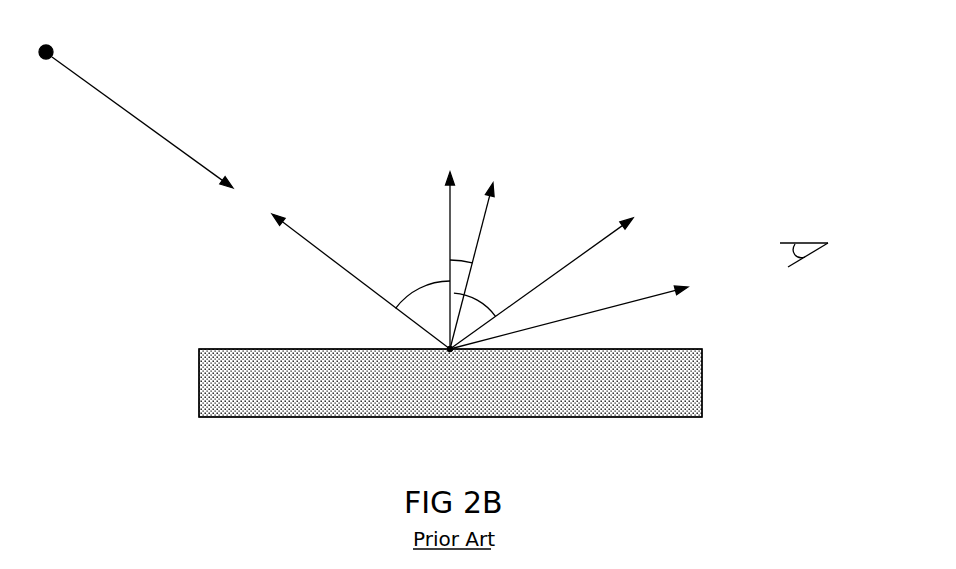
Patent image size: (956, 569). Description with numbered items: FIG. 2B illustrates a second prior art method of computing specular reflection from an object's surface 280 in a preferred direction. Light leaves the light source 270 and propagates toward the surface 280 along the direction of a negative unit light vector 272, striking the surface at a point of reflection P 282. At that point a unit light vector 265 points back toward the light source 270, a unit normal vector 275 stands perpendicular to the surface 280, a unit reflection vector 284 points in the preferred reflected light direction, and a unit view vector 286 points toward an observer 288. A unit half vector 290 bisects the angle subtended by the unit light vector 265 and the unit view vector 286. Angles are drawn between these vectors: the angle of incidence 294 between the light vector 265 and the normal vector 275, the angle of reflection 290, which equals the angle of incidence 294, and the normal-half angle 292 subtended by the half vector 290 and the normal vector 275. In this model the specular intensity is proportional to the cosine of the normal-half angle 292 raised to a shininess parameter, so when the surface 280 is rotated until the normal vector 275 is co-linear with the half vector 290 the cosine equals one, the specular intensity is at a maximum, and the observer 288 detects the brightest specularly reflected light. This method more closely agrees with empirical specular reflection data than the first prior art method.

The light source 270 is at (51, 46).
The unit vector −l 272 is at (101, 89).
The unit vector n 275 is at (447, 225).
The angle of incidence θi 294 is at (392, 296).
The angle θnh 292 is at (457, 258).
The unit vector h 290 is at (494, 200).
The unit vector r 284 is at (599, 246).
The unit vector v 286 is at (648, 296).
The observer 288 is at (803, 242).
The surface 280 is at (235, 348).
The unit vector l 265 is at (330, 262).
The point of reflection P 282 is at (452, 351).